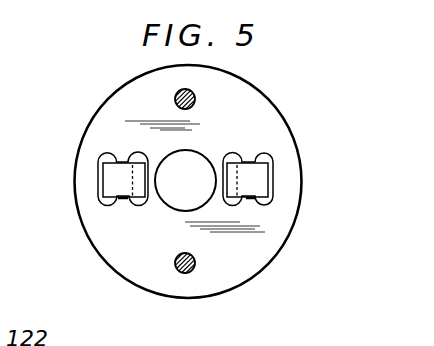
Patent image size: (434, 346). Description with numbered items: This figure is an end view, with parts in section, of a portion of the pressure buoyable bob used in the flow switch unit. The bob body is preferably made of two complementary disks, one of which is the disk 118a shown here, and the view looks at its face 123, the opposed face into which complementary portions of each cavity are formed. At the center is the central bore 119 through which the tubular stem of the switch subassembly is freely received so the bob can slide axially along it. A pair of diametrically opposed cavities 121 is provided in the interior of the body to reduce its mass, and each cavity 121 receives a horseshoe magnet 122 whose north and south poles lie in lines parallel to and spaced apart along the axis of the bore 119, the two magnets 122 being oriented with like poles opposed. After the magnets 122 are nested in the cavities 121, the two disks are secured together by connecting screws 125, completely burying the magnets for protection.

The complementary disk 118a is at (270, 95).
The central bore 119 is at (199, 164).
The cavity 121 is at (270, 156).
The horseshoe magnet 122 is at (112, 176).
The opposed face 123 is at (230, 97).
The connecting screw 125 is at (176, 95).